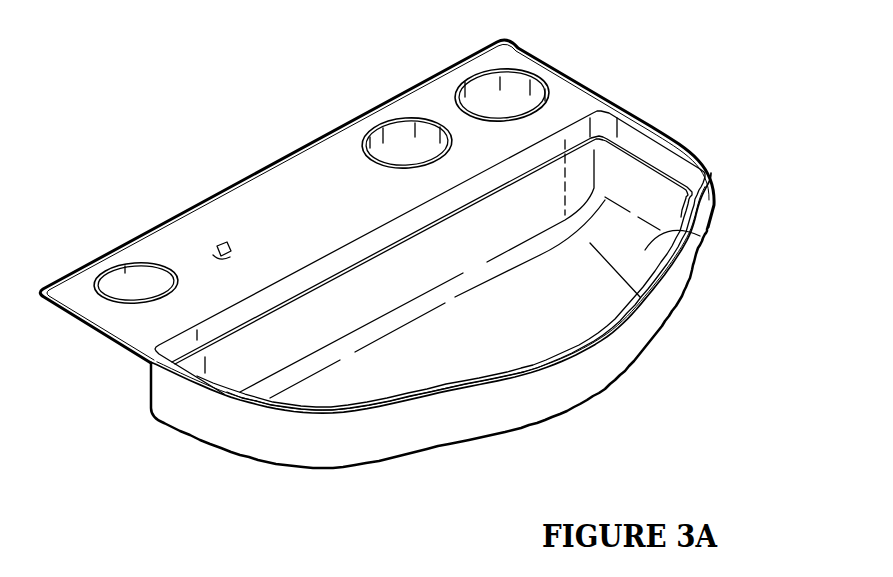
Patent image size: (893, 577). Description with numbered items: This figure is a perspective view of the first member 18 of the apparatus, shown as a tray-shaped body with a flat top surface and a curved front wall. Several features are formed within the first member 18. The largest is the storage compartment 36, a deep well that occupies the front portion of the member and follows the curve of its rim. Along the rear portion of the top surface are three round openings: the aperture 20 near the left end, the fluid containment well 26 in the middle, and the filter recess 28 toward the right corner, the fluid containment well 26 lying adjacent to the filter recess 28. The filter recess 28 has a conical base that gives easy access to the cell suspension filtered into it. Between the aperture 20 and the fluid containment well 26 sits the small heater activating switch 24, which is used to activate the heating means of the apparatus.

The first member 18 is at (583, 100).
The aperture 20 is at (127, 280).
The heater activating switch 24 is at (220, 243).
The fluid containment well 26 is at (400, 137).
The filter recess 28 is at (515, 93).
The storage compartment 36 is at (640, 250).